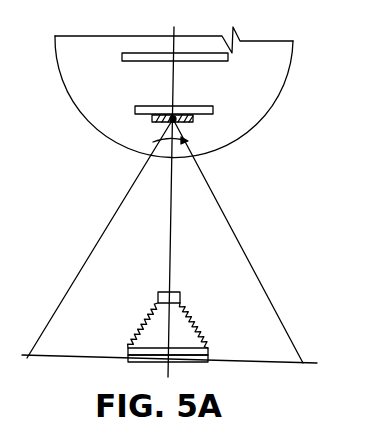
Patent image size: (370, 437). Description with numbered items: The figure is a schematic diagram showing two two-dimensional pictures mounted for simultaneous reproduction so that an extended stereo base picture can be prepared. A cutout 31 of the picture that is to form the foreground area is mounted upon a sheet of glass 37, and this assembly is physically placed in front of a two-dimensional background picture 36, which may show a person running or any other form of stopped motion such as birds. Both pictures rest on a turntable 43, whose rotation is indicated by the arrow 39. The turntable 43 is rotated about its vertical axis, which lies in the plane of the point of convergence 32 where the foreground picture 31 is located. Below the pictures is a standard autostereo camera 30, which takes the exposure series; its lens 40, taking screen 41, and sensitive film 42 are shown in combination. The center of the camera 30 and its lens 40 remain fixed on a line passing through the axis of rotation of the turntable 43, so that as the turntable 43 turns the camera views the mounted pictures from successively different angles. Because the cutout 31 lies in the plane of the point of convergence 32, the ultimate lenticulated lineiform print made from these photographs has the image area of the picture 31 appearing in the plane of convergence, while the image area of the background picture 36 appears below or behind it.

The camera 30 is at (170, 327).
The cutout 31 is at (189, 122).
The point of convergence 32 is at (176, 116).
The two-dimensional background picture 36 is at (134, 61).
The sheet of glass 37 is at (212, 113).
The arrow 39 is at (163, 137).
The lens 40 is at (174, 295).
The taking screen 41 is at (207, 351).
The sensitive film 42 is at (200, 360).
The turntable 43 is at (268, 102).